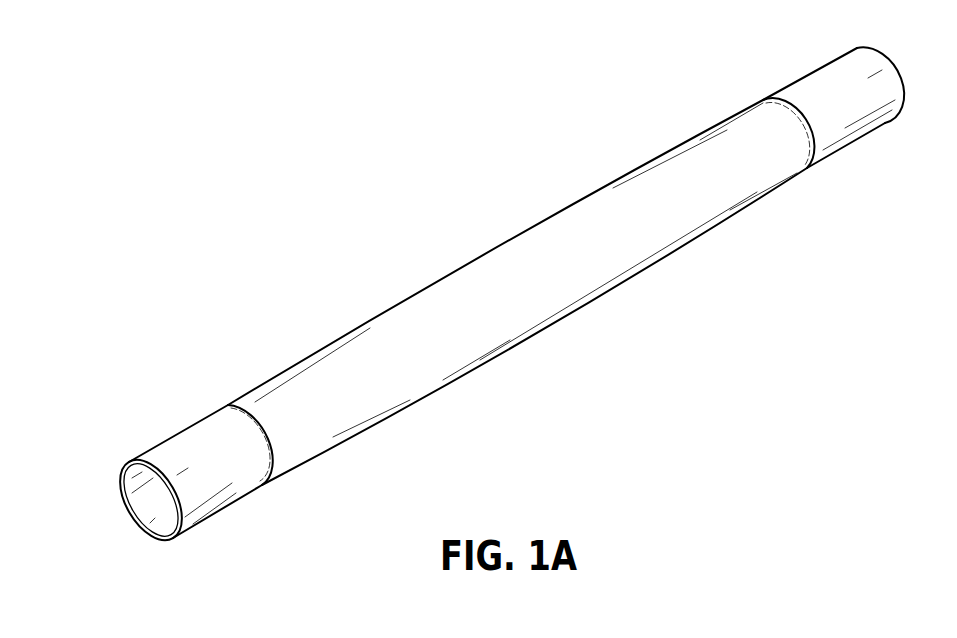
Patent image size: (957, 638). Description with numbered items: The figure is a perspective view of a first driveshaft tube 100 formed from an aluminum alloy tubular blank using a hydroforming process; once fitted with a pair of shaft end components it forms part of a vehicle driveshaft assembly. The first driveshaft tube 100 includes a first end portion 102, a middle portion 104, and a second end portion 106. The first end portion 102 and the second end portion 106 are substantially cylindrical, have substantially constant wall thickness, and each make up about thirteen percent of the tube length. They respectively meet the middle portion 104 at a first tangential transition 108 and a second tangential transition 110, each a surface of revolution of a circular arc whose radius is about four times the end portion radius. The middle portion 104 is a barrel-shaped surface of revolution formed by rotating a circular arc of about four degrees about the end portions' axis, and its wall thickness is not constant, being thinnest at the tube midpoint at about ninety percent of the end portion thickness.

The first driveshaft tube 100 is at (505, 327).
The first end portion 102 is at (172, 437).
The middle portion 104 is at (478, 261).
The second end portion 106 is at (828, 67).
The first tangential transition 108 is at (229, 408).
The second tangential transition 110 is at (766, 101).